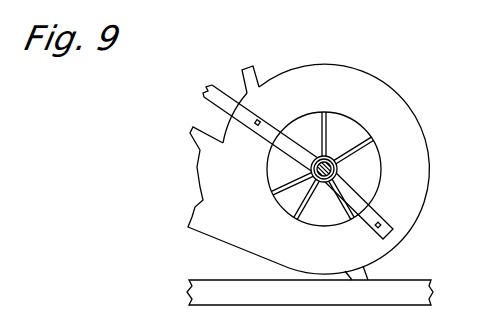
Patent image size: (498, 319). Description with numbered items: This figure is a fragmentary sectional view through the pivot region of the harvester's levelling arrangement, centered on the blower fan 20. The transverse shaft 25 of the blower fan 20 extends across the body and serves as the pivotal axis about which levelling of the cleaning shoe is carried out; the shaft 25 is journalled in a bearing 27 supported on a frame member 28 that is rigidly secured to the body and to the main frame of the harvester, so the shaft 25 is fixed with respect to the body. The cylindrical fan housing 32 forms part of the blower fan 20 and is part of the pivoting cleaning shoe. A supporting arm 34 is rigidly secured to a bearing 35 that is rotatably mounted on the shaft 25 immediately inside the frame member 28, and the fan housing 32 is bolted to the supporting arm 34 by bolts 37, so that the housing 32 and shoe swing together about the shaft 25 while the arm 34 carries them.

The blower fan 20 is at (366, 146).
The transverse shaft 25 is at (318, 181).
The bearing 27 is at (312, 200).
The frame member 28 is at (256, 74).
The fan housing 32 is at (427, 172).
The supporting arm 34 is at (217, 100).
The bearing 35 is at (333, 157).
The bolt 37 is at (255, 125).